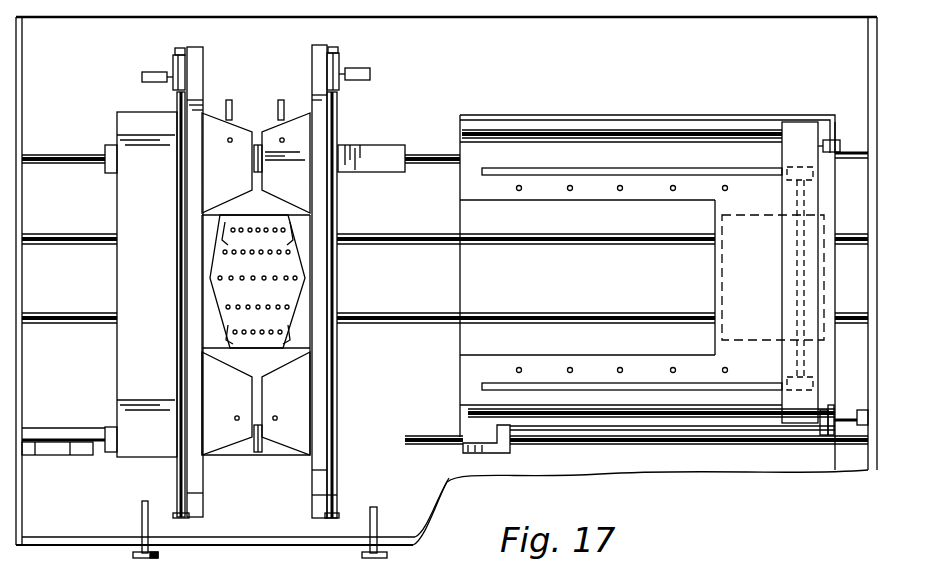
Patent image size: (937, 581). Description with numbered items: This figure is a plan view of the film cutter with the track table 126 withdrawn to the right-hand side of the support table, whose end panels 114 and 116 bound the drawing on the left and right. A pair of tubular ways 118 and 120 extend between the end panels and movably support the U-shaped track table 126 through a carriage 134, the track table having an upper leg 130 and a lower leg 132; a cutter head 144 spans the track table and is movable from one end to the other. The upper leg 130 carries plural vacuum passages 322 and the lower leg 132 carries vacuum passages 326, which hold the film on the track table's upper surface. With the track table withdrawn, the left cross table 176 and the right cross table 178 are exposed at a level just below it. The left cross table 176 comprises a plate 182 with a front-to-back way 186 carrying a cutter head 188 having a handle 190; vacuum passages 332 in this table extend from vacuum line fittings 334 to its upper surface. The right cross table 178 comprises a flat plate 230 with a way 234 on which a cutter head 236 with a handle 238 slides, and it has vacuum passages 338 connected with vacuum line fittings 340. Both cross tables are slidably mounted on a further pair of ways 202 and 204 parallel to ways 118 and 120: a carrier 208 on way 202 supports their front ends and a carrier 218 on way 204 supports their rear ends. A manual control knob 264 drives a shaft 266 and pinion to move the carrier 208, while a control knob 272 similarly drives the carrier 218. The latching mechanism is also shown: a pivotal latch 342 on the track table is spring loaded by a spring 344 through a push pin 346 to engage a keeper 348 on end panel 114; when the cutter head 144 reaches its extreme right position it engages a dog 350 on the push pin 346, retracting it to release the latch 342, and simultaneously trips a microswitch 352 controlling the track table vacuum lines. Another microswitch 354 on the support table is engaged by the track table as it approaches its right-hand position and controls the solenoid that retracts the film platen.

The end panel 114 is at (75, 105).
The end panel 116 is at (868, 68).
The tubular way 118 is at (527, 244).
The tubular way 120 is at (444, 315).
The track table 126 is at (713, 112).
The upper leg 130 is at (523, 200).
The lower leg 132 is at (515, 358).
The carriage 134 is at (722, 280).
The cutter head 144 is at (782, 373).
The left cross table 176 is at (110, 183).
The right cross table 178 is at (340, 195).
The plate 182 is at (113, 335).
The way 186 is at (177, 325).
The cutter head 188 is at (203, 62).
The handle 190 is at (155, 72).
The way 202 is at (443, 437).
The way 204 is at (415, 163).
The carrier 208 is at (232, 455).
The carrier 218 is at (358, 145).
The flat plate 230 is at (306, 470).
The way 234 is at (340, 385).
The cutter head 236 is at (345, 60).
The handle 238 is at (362, 82).
The manual control knob 264 is at (387, 556).
The shaft 266 is at (377, 527).
The control knob 272 is at (138, 556).
The vacuum passages 322 is at (632, 158).
The vacuum passages 326 is at (570, 368).
The vacuum passages 332 is at (230, 141).
The vacuum line fittings 334 is at (228, 102).
The vacuum passages 338 is at (282, 141).
The vacuum line fittings 340 is at (284, 102).
The pivotal latch 342 is at (490, 453).
The spring 344 is at (834, 433).
The push pin 346 is at (625, 426).
The keeper 348 is at (42, 457).
The dog 350 is at (814, 432).
The microswitch 352 is at (832, 140).
The microswitch 354 is at (840, 408).